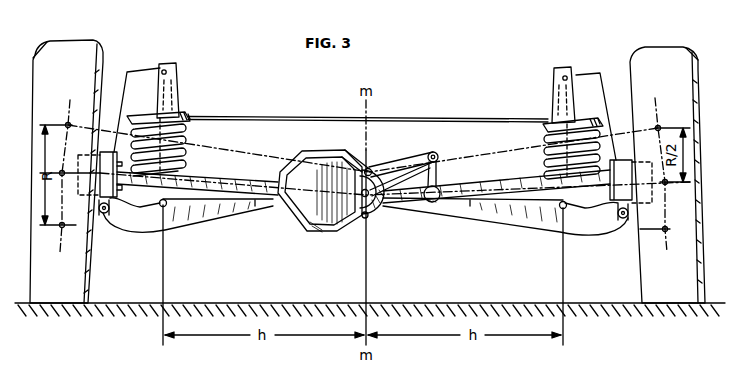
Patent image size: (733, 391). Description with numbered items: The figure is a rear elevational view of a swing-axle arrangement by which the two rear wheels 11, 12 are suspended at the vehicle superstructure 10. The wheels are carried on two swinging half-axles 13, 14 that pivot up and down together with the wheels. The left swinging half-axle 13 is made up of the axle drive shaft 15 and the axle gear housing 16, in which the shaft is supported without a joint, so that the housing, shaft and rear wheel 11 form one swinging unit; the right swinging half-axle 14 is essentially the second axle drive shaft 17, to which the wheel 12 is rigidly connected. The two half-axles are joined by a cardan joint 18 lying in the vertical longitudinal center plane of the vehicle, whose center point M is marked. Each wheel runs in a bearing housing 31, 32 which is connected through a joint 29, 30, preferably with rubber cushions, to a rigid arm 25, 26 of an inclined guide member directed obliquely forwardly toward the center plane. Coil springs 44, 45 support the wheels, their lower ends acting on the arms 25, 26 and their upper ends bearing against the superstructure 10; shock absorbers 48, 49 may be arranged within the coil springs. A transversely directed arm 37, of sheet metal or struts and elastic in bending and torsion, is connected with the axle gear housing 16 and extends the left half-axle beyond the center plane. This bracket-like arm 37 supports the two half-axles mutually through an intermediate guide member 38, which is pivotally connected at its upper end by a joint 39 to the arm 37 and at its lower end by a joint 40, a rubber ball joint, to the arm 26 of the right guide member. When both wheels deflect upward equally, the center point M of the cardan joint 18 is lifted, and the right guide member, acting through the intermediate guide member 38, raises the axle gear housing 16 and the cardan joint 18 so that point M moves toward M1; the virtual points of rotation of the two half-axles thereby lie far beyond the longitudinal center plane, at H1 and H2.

The vehicle superstructure 10 is at (430, 117).
The rear wheel 11 is at (80, 276).
The rear wheel 12 is at (650, 273).
The swinging half-axle 13 is at (217, 222).
The swinging half-axle 14 is at (505, 227).
The axle drive shaft 15 is at (210, 178).
The axle gear housing 16 is at (325, 218).
The second axle drive shaft 17 is at (525, 182).
The cardan joint 18 is at (361, 218).
The rigid arm 25 is at (248, 218).
The rigid arm 26 is at (485, 230).
The joint 29 is at (106, 214).
The joint 30 is at (623, 219).
The bearing housing 31 is at (100, 153).
The bearing housing 32 is at (622, 172).
The transversely directed arm 37 is at (347, 148).
The intermediate guide member 38 is at (434, 173).
The joint 39 is at (435, 152).
The joint 40 is at (432, 203).
The coil spring 44 is at (180, 136).
The coil spring 45 is at (545, 139).
The shock absorber 48 is at (165, 125).
The shock absorber 49 is at (563, 130).
The center point of the cardan joint M is at (372, 208).
The raised position of center point M1 is at (372, 169).
The virtual point of rotation H1 is at (561, 209).
The virtual point of rotation H2 is at (166, 207).